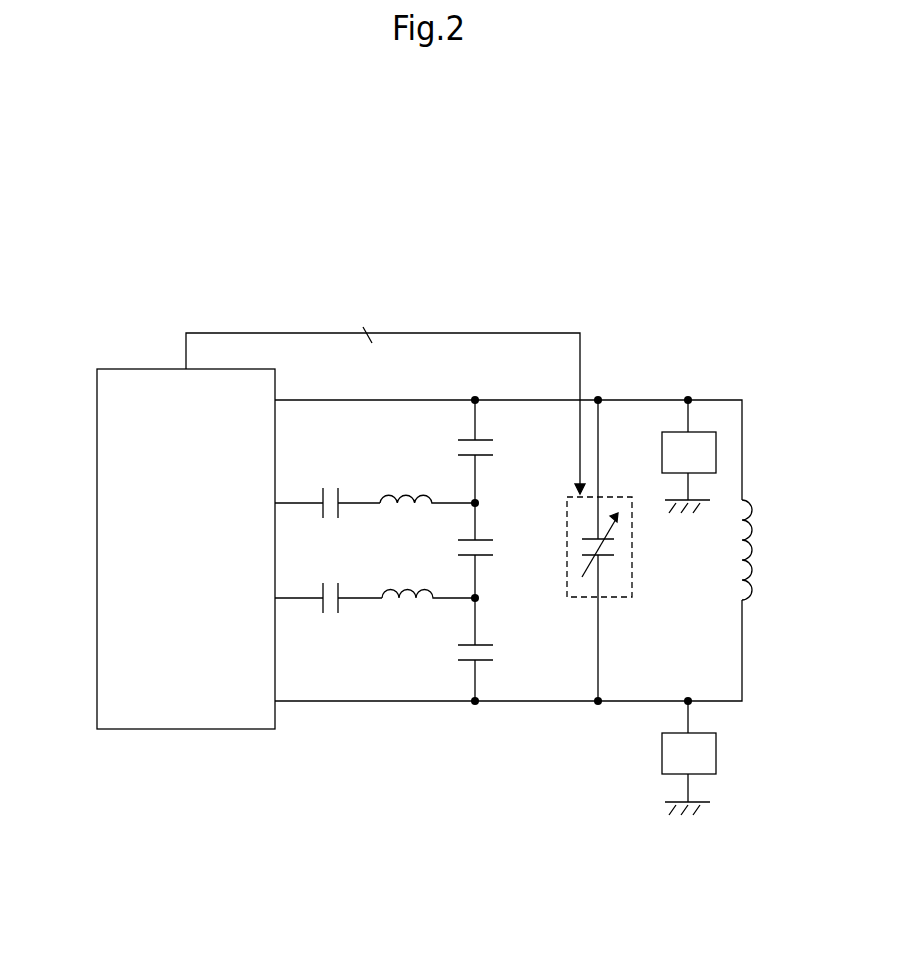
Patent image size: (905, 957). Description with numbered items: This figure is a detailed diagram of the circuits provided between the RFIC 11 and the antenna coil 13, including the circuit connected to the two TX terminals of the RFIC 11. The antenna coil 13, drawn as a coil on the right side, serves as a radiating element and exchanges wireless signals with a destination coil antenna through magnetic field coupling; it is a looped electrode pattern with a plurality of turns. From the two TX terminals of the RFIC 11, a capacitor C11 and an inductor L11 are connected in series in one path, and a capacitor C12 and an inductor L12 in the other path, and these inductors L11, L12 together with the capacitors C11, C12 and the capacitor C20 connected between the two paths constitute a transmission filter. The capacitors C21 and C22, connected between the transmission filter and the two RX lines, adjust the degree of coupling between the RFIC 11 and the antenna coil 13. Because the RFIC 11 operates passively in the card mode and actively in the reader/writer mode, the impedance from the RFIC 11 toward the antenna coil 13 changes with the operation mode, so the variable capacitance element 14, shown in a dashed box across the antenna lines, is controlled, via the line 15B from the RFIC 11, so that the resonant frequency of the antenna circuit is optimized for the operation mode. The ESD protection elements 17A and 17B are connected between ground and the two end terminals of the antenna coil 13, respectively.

The RFIC 11 is at (97, 556).
The antenna coil 13 is at (757, 548).
The variable capacitance element 14 is at (611, 495).
The control line 15B is at (580, 345).
The ESD protection element 17A is at (716, 452).
The ESD protection element 17B is at (716, 750).
The capacitor C11 is at (327, 484).
The capacitor C12 is at (328, 581).
The inductor L11 is at (427, 476).
The inductor L12 is at (428, 574).
The capacitor C21 is at (496, 448).
The capacitor C20 is at (496, 546).
The capacitor C22 is at (496, 651).